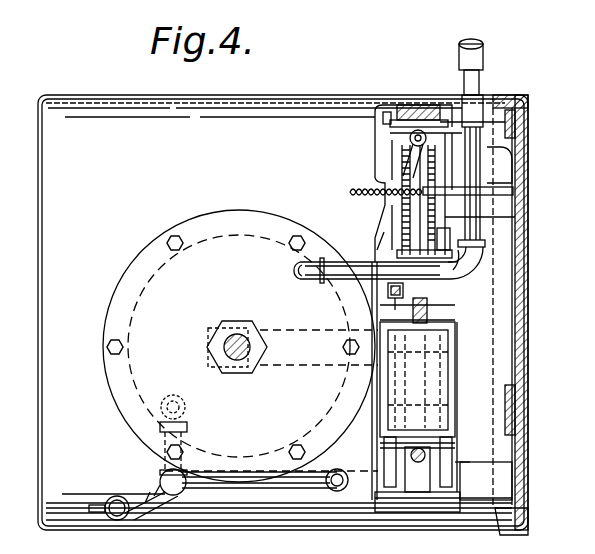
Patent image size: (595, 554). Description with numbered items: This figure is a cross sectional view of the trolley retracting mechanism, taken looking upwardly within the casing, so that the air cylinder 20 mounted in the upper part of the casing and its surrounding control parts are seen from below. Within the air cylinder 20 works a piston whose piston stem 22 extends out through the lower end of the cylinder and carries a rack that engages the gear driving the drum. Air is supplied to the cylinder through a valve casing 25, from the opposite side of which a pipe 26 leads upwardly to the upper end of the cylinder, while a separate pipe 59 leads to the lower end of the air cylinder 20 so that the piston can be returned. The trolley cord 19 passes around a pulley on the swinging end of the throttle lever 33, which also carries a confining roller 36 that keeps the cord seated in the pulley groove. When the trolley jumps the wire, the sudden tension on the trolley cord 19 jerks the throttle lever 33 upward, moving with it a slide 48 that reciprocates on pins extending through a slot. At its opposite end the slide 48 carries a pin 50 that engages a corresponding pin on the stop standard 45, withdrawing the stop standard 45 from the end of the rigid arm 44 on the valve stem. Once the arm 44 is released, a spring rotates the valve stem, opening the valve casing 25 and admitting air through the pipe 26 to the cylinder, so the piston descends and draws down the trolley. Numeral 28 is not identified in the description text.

The trolley cord 19 is at (423, 308).
The air cylinder 20 is at (125, 278).
The piston stem 22 is at (237, 362).
The valve casing 25 is at (279, 528).
The pipe 26 is at (308, 490).
The valve 28 is at (124, 474).
The throttle lever 33 is at (377, 420).
The confining roller 36 is at (396, 118).
The rigid arm 44 is at (417, 311).
The stop standard 45 is at (386, 291).
The slide 48 is at (445, 233).
The pin 50 is at (473, 266).
The pipe 59 is at (330, 264).